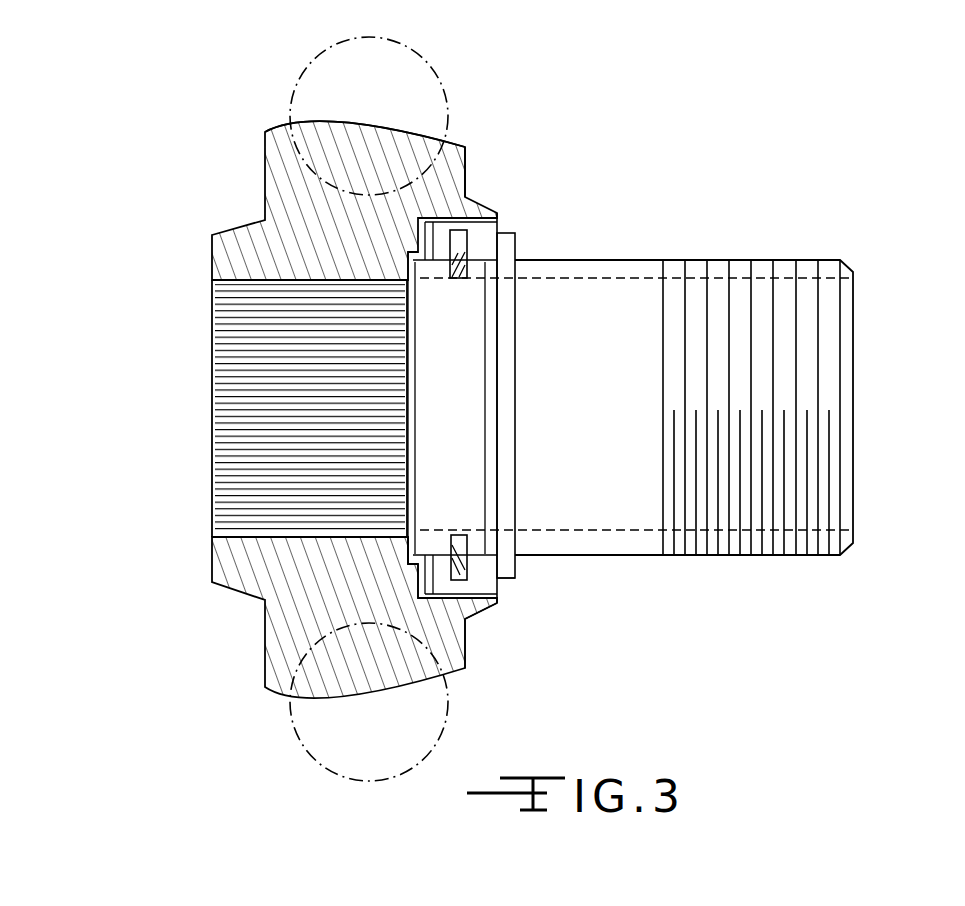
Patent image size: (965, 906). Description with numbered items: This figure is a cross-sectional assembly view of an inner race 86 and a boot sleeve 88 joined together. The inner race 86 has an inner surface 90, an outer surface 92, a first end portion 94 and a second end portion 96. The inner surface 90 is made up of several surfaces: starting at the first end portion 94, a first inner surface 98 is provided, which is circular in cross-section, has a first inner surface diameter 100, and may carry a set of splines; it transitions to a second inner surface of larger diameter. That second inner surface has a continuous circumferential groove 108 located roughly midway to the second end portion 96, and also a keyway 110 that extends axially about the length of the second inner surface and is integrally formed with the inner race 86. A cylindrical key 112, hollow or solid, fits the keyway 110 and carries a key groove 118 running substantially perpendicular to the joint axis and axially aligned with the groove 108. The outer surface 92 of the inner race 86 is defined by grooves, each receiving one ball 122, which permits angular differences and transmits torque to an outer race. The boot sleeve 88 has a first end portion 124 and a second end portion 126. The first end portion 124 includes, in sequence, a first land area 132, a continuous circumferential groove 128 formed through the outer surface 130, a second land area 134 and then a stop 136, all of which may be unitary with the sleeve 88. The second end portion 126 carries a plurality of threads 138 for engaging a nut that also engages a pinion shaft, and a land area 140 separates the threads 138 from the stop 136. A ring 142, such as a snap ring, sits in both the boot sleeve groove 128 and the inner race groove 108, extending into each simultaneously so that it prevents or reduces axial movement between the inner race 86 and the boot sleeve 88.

The inner race 86 is at (278, 208).
The boot sleeve 88 is at (778, 258).
The inner surface 90 is at (240, 366).
The outer surface 92 is at (466, 134).
The first end portion 94 is at (196, 273).
The second end portion 96 is at (504, 196).
The first inner surface 98 is at (257, 533).
The first inner surface diameter 100 is at (308, 527).
The groove 108 is at (467, 612).
The keyway 110 is at (490, 218).
The key 112 is at (483, 244).
The key groove 118 is at (462, 222).
The ball 122 is at (448, 92).
The first end portion 124 is at (391, 551).
The second end portion 126 is at (701, 567).
The groove 128 is at (435, 574).
The outer surface 130 is at (618, 558).
The first land area 132 is at (430, 547).
The second land area 134 is at (475, 553).
The stop 136 is at (502, 585).
The threads 138 is at (798, 355).
The land area 140 is at (632, 258).
The ring 142 is at (458, 262).